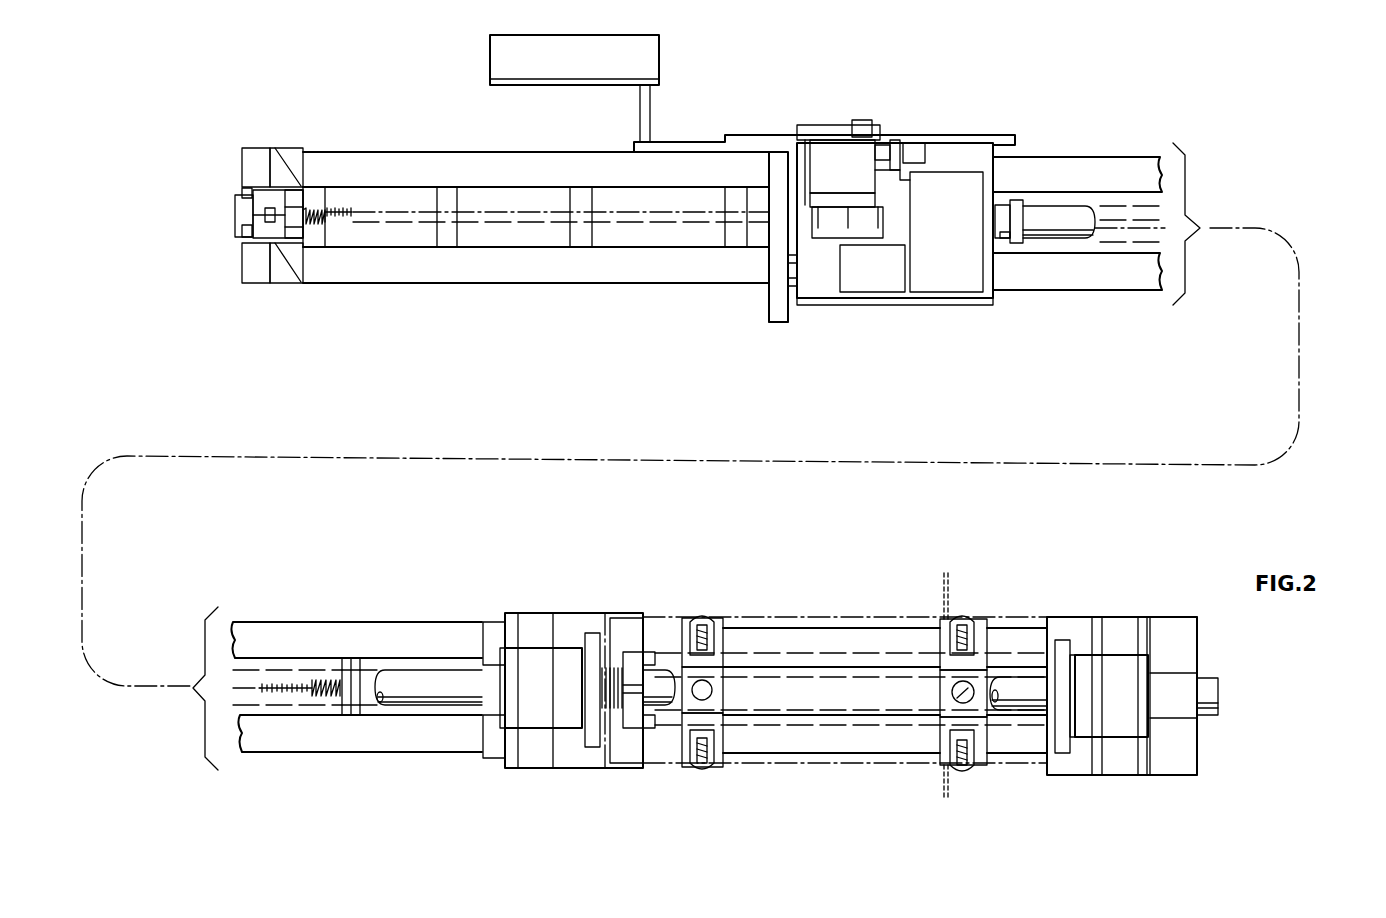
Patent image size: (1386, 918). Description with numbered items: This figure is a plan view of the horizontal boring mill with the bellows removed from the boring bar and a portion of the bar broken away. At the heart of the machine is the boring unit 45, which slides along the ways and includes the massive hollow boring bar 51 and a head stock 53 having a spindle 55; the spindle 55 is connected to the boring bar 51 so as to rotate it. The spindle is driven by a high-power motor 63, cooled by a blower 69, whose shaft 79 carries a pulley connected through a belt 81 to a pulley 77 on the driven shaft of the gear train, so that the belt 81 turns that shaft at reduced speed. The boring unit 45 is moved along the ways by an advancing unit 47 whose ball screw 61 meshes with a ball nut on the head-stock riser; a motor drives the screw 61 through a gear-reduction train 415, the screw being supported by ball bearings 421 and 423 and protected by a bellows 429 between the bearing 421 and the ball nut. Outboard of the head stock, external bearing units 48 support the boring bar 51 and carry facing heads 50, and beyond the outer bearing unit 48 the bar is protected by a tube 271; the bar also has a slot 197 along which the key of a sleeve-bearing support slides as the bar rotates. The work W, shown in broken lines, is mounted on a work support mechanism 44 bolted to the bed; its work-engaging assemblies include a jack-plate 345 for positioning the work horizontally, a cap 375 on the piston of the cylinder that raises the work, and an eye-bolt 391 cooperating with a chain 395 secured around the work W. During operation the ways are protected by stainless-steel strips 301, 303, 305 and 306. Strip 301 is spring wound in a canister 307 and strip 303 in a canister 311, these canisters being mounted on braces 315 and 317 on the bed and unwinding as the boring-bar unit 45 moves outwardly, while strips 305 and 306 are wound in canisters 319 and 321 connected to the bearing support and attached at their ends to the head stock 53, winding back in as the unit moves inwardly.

The strip 301 is at (411, 160).
The strip 303 is at (414, 280).
The strip 305 is at (1097, 148).
The strip 306 is at (1091, 286).
The canister 307 is at (263, 150).
The canister 311 is at (262, 282).
The brace 315 is at (283, 150).
The brace 317 is at (278, 286).
The canister 319 is at (490, 626).
The canister 321 is at (494, 756).
The gear-reduction train 415 is at (228, 217).
The ball bearing 421 is at (346, 188).
The ball bearing 423 is at (354, 666).
The bellows 429 is at (315, 239).
The advancing unit 47 is at (432, 207).
The ball screw 61 is at (340, 222).
The boring bar 51 is at (1081, 212).
The spindle 55 is at (1005, 205).
The shaft 79 is at (769, 163).
The belt 81 is at (770, 258).
The pulley 77 is at (797, 264).
The boring unit 45 is at (912, 312).
The motor 63 is at (844, 170).
The blower 69 is at (925, 153).
The head stock 53 is at (956, 243).
The external bearing unit 48 is at (558, 698).
The facing head 50 is at (599, 642).
The jack-plate 345 is at (723, 638).
The eye-bolt 391 is at (942, 628).
The cap 375 is at (952, 692).
The chain 395 is at (952, 602).
The work support mechanism 44 is at (930, 648).
The work W is at (881, 621).
The tube 271 is at (1196, 678).
The slot 197 is at (1208, 708).